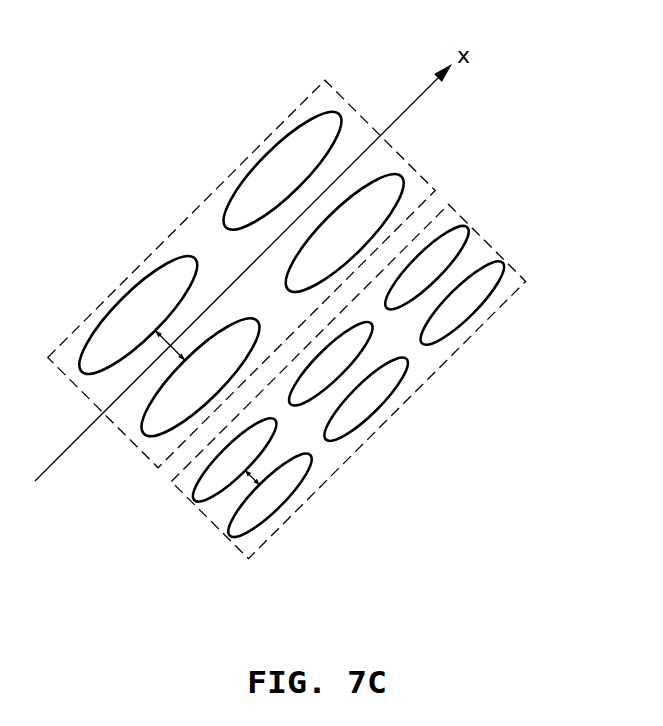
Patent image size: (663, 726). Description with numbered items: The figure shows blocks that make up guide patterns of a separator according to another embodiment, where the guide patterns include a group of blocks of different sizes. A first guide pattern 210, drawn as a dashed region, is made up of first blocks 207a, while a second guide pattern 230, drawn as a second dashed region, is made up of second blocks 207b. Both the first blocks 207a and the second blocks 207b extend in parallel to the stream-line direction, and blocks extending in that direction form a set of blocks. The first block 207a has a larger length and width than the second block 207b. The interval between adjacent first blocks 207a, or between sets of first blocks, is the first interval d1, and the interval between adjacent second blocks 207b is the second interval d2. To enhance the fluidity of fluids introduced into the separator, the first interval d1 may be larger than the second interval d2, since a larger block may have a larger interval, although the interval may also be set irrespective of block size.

The first block 207a is at (409, 164).
The second block 207b is at (504, 259).
The first guide pattern 210 is at (127, 437).
The second guide pattern 230 is at (195, 506).
The first interval d1 is at (168, 344).
The second interval d2 is at (252, 478).